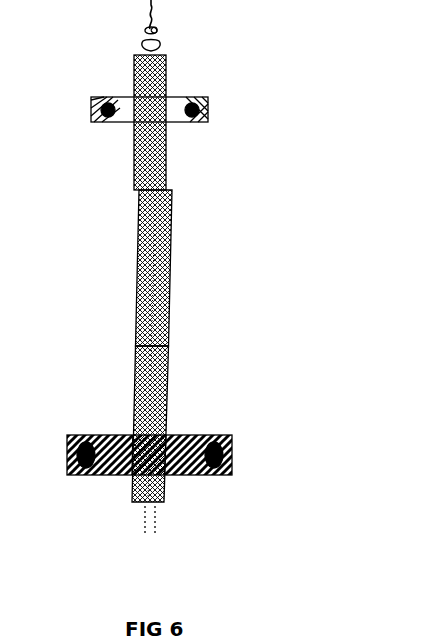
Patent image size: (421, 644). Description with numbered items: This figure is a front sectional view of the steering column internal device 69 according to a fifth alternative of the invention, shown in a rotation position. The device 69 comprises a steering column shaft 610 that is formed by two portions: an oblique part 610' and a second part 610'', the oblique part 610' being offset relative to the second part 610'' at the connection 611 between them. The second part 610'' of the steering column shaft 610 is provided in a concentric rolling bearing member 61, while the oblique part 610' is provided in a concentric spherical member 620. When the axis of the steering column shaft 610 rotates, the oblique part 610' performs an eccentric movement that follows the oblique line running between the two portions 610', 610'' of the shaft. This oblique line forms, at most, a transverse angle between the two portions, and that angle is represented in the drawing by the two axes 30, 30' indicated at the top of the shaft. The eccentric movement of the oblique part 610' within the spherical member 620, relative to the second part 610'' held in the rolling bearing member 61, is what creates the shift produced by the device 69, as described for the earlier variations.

The axis 30 is at (112, 33).
The axis 30' is at (197, 36).
The concentric rolling bearing member 61 is at (212, 113).
The connection 611 is at (135, 192).
The steering column shaft 610 is at (197, 357).
The oblique part 610' is at (192, 424).
The second part 610'' is at (196, 262).
The concentric spherical member 620 is at (238, 458).
The steering column internal device 69 is at (176, 268).